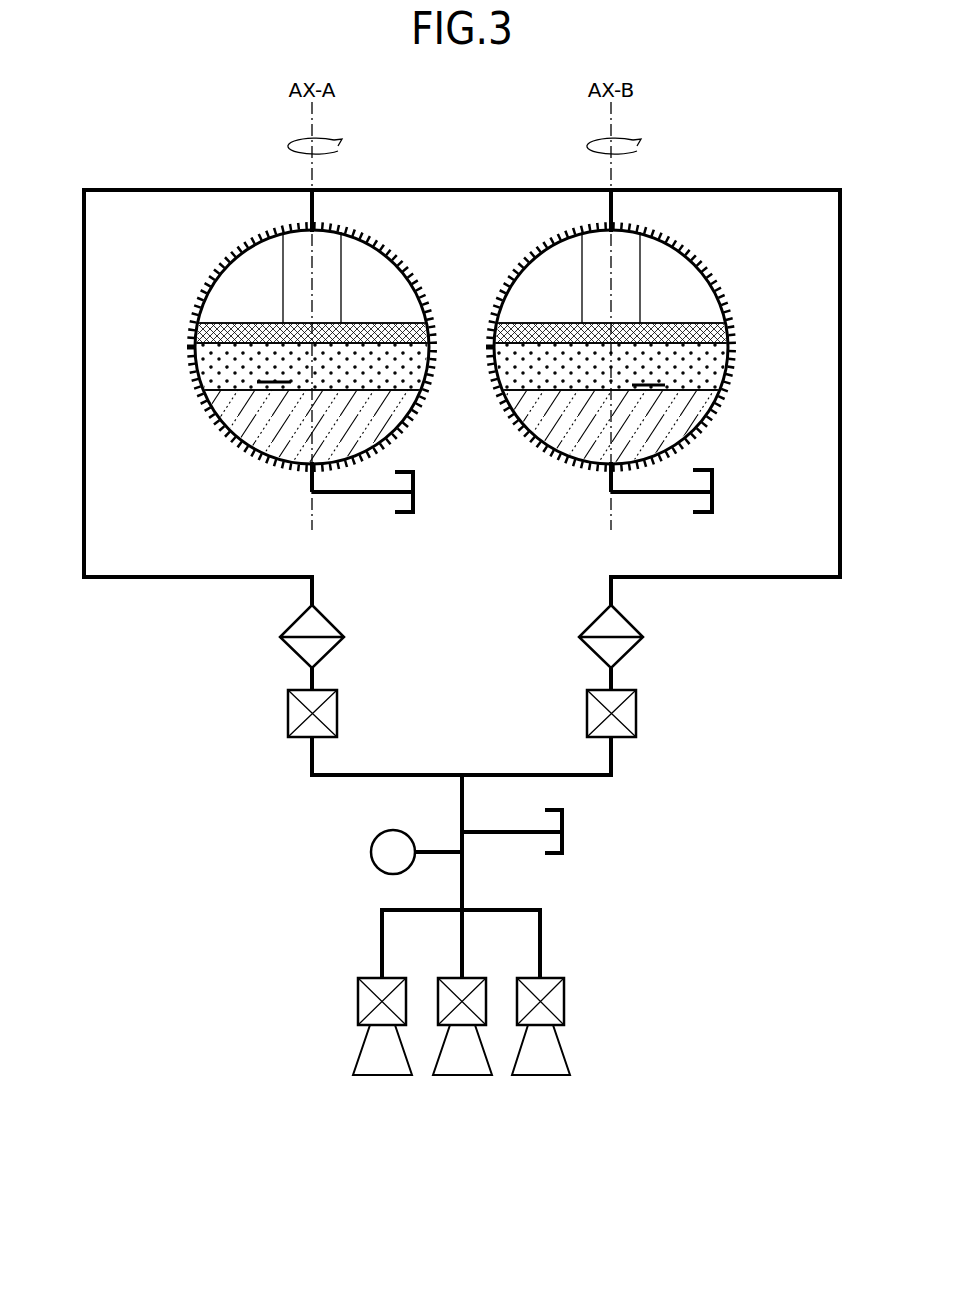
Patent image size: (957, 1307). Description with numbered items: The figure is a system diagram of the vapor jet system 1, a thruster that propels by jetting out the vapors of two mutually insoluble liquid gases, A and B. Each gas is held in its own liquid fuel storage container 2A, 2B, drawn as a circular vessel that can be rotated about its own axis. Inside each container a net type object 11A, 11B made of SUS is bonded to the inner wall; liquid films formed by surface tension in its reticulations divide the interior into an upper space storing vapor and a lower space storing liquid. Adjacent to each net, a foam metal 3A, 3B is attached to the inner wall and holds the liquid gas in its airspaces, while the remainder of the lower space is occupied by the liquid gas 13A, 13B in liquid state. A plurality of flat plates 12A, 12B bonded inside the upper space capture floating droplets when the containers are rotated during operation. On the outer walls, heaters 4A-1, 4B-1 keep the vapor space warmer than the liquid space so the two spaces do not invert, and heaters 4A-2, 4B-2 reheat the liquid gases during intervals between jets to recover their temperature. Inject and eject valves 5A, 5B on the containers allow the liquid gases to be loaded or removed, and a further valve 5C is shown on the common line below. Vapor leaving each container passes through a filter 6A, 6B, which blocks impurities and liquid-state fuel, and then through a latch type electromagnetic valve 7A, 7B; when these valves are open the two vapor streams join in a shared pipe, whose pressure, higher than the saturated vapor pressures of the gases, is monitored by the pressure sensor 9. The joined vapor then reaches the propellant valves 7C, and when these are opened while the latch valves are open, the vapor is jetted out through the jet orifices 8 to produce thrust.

The vapor jet system 1 is at (713, 950).
The liquid fuel storage container 2A is at (287, 358).
The liquid fuel storage container 2B is at (635, 366).
The foam metal 3A is at (387, 363).
The foam metal 3B is at (570, 362).
The heater 4A-1 is at (369, 228).
The heater 4A-2 is at (229, 433).
The heater 4B-1 is at (560, 230).
The heater 4B-2 is at (545, 460).
The inject and eject valve 5A is at (417, 508).
The inject and eject valve 5B is at (692, 502).
The drive unit C 5C is at (567, 842).
The filter 6A is at (333, 622).
The filter 6B is at (632, 622).
The latch type electromagnetic valve 7A is at (338, 713).
The latch type electromagnetic valve 7B is at (637, 713).
The propellant valves 7C is at (343, 972).
The jet orifices 8 is at (590, 1089).
The pressure sensor 9 is at (373, 845).
The net type object 11A is at (405, 323).
The net type object 11B is at (520, 325).
The flat plates 12A is at (272, 304).
The flat plates 12B is at (523, 304).
The liquid gas in liquid state 13A is at (285, 432).
The liquid gas in liquid state 13B is at (587, 417).